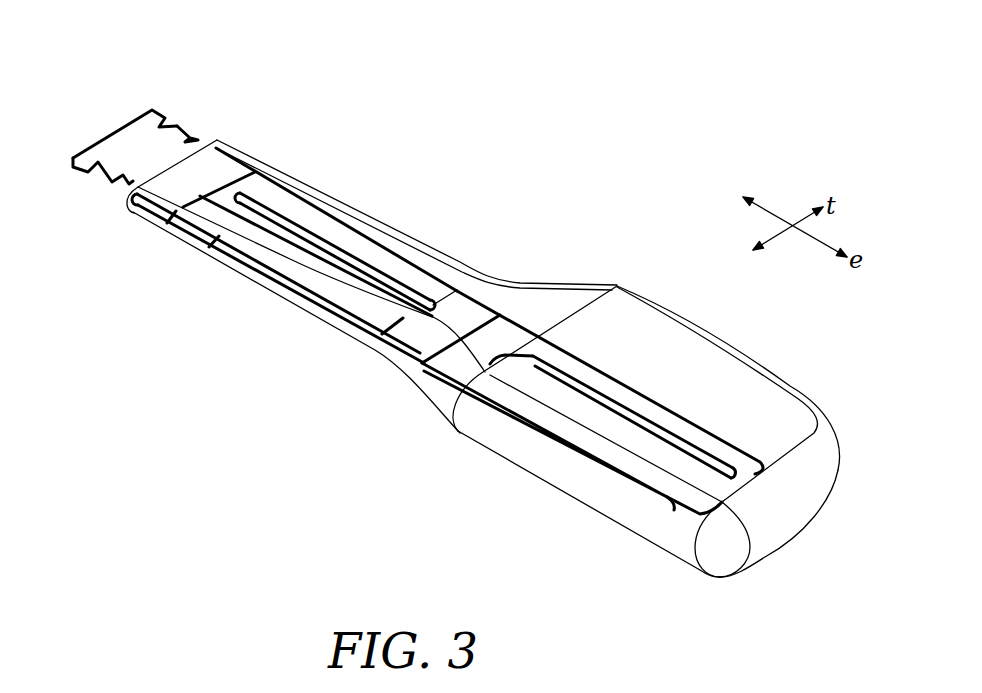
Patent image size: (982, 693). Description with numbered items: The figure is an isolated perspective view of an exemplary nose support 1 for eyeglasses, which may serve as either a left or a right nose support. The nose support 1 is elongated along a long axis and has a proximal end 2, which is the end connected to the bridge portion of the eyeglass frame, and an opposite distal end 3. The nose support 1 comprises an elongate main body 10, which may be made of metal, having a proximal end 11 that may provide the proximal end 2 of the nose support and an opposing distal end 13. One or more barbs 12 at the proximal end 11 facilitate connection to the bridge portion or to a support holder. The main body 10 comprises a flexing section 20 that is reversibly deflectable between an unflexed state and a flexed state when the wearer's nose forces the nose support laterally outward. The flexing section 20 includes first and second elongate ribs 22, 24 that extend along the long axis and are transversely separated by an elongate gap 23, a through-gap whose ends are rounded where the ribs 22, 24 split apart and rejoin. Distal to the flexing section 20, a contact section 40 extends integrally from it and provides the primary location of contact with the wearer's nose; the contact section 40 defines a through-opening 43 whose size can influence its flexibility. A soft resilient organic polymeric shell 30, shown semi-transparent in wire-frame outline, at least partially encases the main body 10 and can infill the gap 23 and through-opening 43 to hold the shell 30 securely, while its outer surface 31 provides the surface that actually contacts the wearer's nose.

The nose support 1 is at (648, 115).
The proximal end 2 is at (110, 42).
The distal end 3 is at (783, 592).
The main body 10 is at (458, 335).
The proximal end 11 is at (72, 190).
The barb 12 is at (193, 138).
The distal end 13 is at (752, 507).
The flexing section 20 is at (265, 325).
The first elongate rib 22 is at (260, 250).
The elongate gap 23 is at (273, 223).
The second elongate rib 24 is at (353, 240).
The soft resilient organic polymeric shell 30 is at (652, 320).
The outer surface 31 is at (610, 480).
The contact section 40 is at (508, 512).
The through-opening 43 is at (650, 440).